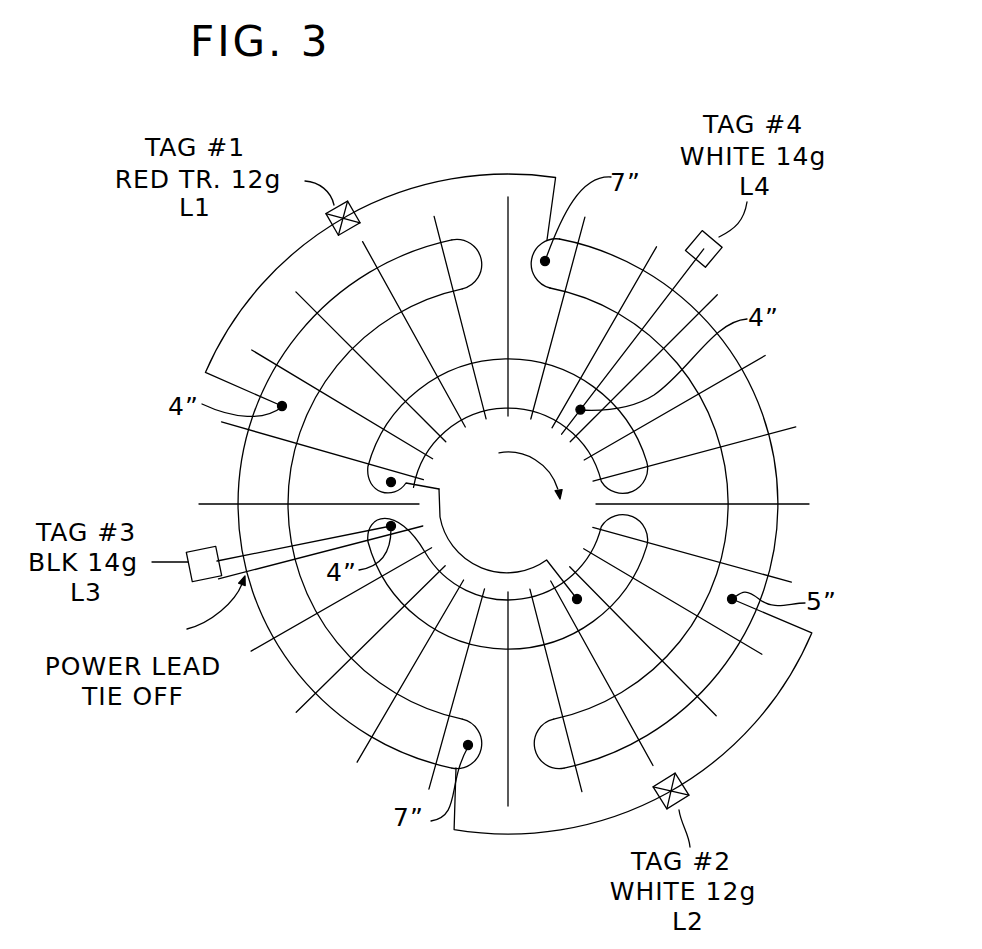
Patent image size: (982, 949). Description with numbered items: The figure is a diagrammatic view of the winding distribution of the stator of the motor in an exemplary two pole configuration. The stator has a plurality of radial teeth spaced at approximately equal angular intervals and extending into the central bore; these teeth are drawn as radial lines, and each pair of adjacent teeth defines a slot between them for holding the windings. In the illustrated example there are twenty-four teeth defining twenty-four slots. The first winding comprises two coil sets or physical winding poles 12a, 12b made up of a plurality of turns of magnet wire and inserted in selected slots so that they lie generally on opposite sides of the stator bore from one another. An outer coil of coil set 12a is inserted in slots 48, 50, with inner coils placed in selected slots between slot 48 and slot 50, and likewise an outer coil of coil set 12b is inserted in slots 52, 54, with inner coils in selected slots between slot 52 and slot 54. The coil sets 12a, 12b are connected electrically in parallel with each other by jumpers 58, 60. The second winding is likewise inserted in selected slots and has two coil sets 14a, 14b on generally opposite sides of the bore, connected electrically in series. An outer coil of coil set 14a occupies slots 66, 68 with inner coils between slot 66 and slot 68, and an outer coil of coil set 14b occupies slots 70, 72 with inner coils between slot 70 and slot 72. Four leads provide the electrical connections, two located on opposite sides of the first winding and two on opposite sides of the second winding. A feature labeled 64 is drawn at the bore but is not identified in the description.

The coil set of first winding 12a is at (344, 736).
The coil set of first winding 12b is at (758, 400).
The coil set of second winding 14a is at (487, 350).
The coil set of second winding 14b is at (473, 579).
The slot 48 is at (496, 763).
The slot 50 is at (494, 247).
The slot 52 is at (523, 246).
The slot 54 is at (522, 771).
The jumper 58 is at (213, 362).
The jumper 60 is at (774, 703).
The step in second winding 64 is at (441, 517).
The slot 66 is at (216, 483).
The slot 68 is at (805, 488).
The slot 70 is at (216, 538).
The slot 72 is at (805, 550).